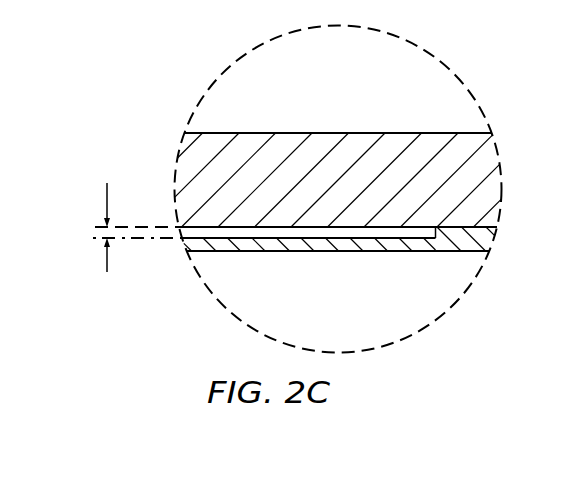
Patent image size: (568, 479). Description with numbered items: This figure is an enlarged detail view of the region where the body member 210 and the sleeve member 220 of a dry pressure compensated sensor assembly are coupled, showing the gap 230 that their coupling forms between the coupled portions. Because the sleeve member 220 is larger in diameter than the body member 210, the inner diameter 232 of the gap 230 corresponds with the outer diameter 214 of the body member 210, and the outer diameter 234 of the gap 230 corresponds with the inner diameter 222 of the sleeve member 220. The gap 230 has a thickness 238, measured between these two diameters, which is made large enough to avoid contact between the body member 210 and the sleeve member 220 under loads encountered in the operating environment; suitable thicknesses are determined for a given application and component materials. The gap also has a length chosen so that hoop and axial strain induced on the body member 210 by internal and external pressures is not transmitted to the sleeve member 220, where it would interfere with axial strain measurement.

The body member 210 is at (310, 152).
The sleeve member 220 is at (248, 245).
The gap 230 is at (355, 233).
The inner diameter of gap 232 is at (108, 188).
The outer diameter of body member 214 is at (143, 227).
The outer diameter of gap 234 is at (113, 282).
The inner diameter of sleeve member 222 is at (153, 238).
The thickness of gap 238 is at (106, 238).